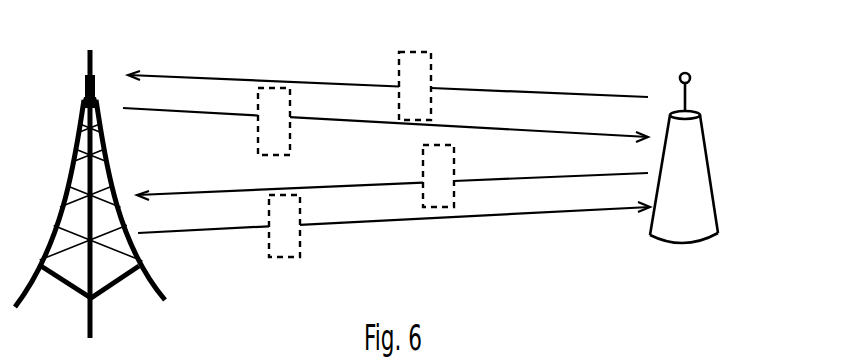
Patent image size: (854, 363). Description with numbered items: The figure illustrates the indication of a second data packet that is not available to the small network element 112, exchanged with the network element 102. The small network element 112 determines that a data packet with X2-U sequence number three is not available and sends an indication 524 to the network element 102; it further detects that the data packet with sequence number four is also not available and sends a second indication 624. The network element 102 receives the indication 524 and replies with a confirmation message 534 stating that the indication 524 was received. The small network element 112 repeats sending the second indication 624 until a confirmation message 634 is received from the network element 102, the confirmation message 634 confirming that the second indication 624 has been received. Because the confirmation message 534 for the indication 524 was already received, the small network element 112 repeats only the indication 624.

The network element 102 is at (83, 106).
The small network element 112 is at (684, 109).
The indication 524 is at (399, 88).
The confirmation message 534 is at (290, 135).
The second indication 624 is at (455, 176).
The confirmation message 634 is at (300, 226).